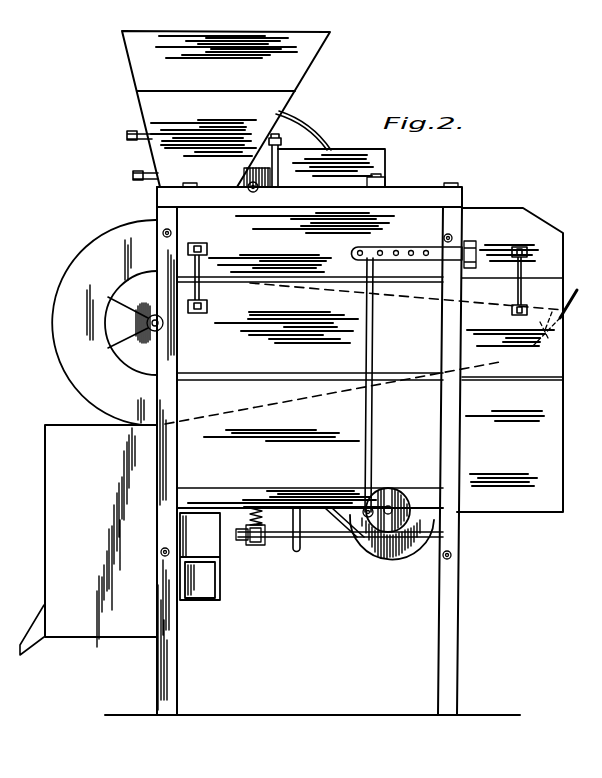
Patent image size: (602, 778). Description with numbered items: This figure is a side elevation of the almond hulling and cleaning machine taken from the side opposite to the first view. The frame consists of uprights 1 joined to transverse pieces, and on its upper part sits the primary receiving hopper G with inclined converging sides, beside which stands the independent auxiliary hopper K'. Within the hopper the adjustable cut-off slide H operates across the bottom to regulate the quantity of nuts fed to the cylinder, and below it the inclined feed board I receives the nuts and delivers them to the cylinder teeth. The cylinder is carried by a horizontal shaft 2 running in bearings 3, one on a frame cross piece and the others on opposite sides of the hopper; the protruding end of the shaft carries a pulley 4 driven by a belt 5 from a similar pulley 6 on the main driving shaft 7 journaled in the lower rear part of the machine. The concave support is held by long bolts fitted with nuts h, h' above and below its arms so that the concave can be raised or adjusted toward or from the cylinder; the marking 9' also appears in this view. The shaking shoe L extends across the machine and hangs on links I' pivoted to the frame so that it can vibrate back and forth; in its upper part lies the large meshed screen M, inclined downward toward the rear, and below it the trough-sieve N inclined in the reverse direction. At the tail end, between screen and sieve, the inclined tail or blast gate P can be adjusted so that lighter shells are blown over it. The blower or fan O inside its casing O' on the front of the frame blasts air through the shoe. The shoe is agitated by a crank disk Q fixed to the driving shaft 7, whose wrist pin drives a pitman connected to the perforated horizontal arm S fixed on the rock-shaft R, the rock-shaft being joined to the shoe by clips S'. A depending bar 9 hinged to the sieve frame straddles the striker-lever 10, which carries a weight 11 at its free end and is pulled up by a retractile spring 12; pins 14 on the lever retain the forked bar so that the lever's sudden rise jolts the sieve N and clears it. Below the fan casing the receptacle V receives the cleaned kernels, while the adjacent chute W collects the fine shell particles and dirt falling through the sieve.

The primary receiving hopper G is at (226, 109).
The auxiliary hopper K' is at (216, 123).
The cut-off slide H is at (135, 146).
The inclined feed board I is at (137, 187).
The belt 5 is at (305, 131).
The pulley 4 is at (323, 137).
The nut h' is at (284, 160).
The nut h is at (241, 170).
The bearing 3 is at (248, 189).
The plate 9' is at (294, 172).
The horizontal shaft 2 is at (252, 192).
The uprights 1 is at (445, 665).
The large meshed screen M is at (310, 357).
The shaking shoe L is at (402, 327).
The trough-sieve N is at (263, 432).
The tail or blast gate P is at (420, 360).
The perforated horizontal arm S is at (407, 370).
The rock-shaft R is at (467, 244).
The bar end S' is at (496, 267).
The hanger brackets I' is at (363, 279).
The blower or fan O is at (134, 323).
The fan casing O' is at (104, 322).
The receptacle V is at (88, 540).
The chute W is at (200, 556).
The weight 11 is at (262, 537).
The retractile spring 12 is at (263, 520).
The studs or pins 14 is at (297, 551).
The depending bar 9 is at (354, 351).
The striker-lever 10 is at (346, 527).
The pulley 6 is at (388, 472).
The crank disk Q is at (399, 463).
The main driving shaft 7 is at (407, 490).